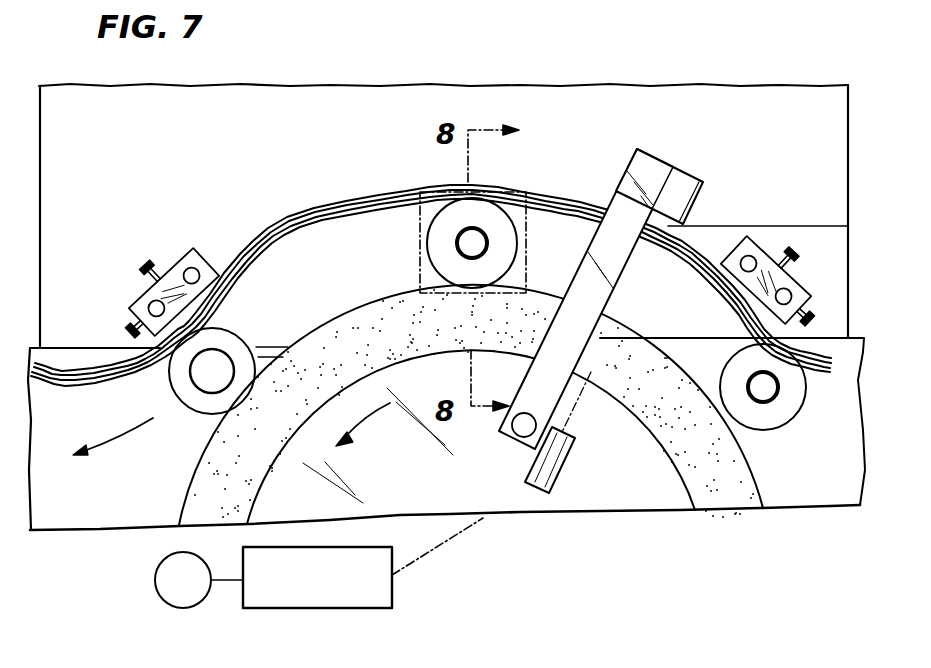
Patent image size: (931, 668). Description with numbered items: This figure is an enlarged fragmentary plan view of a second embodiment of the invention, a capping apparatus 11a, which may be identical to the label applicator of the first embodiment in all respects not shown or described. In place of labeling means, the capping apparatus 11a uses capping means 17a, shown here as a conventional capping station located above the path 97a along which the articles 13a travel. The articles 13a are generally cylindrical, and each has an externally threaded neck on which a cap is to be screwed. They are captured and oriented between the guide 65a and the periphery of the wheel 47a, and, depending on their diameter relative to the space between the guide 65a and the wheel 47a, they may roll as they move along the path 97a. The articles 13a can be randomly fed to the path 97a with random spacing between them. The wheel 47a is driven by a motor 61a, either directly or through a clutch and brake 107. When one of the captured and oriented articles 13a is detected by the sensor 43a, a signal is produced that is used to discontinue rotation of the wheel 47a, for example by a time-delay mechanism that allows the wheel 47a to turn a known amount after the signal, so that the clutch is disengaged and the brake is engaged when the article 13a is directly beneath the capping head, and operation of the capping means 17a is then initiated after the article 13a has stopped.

The capping apparatus 11a is at (240, 80).
The path 97a is at (292, 266).
The capping means 17a is at (418, 238).
The article 13a is at (483, 216).
The guide 65a is at (812, 338).
The sensor 43a is at (542, 503).
The wheel 47a is at (718, 497).
The motor 61a is at (154, 578).
The clutch and brake 107 is at (258, 598).